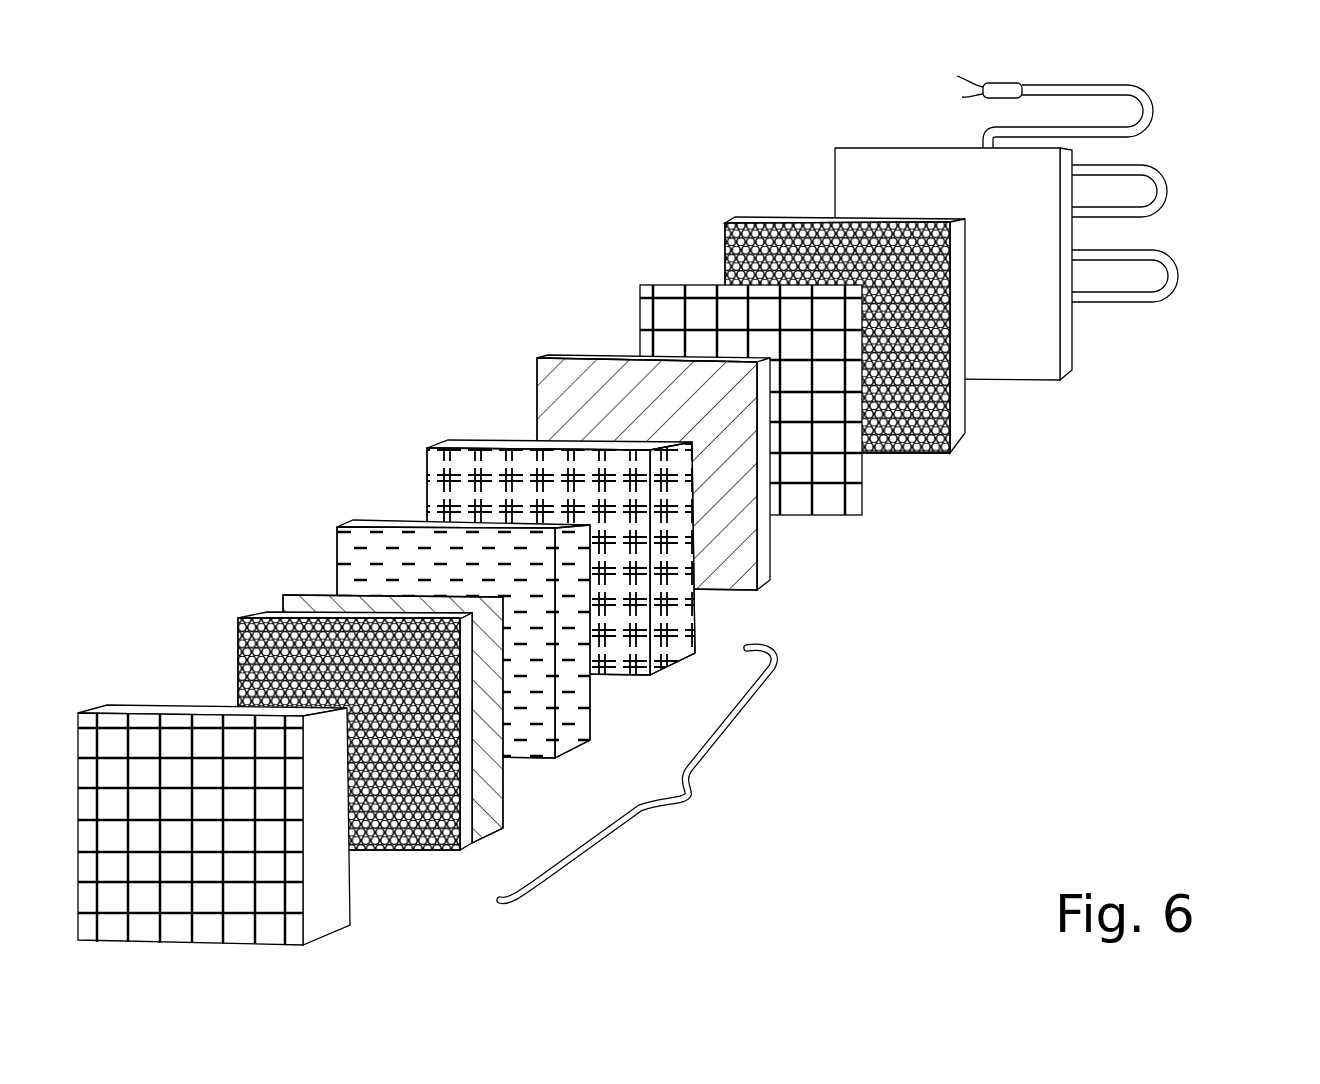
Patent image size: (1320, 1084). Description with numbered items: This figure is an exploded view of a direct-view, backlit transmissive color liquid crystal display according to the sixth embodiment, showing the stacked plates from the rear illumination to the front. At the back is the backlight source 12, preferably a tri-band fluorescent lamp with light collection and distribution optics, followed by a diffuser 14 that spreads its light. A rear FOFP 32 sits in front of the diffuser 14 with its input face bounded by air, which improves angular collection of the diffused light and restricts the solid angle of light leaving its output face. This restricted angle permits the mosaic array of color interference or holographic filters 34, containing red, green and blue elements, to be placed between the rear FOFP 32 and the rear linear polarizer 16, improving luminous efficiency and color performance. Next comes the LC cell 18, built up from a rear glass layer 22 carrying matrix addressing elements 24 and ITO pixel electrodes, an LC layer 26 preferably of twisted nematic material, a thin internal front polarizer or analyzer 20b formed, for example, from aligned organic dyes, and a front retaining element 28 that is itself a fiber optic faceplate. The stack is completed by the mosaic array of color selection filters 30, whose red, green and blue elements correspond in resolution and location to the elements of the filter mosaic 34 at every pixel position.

The backlight source 12 is at (1163, 201).
The diffuser 14 is at (1063, 358).
The rear linear polarizer 16 is at (765, 573).
The LC cell 18 is at (637, 773).
The front polarizer or analyzer 20b is at (493, 807).
The rear glass layer 22 is at (497, 435).
The matrix addressing elements 24 is at (450, 475).
The LC layer 26 is at (358, 568).
The front retaining element 28 is at (255, 645).
The mosaic array of color selection filters 30 is at (303, 925).
The rear FOFP 32 is at (963, 425).
The mosaic array of color interference or holographic filters 34 is at (863, 488).